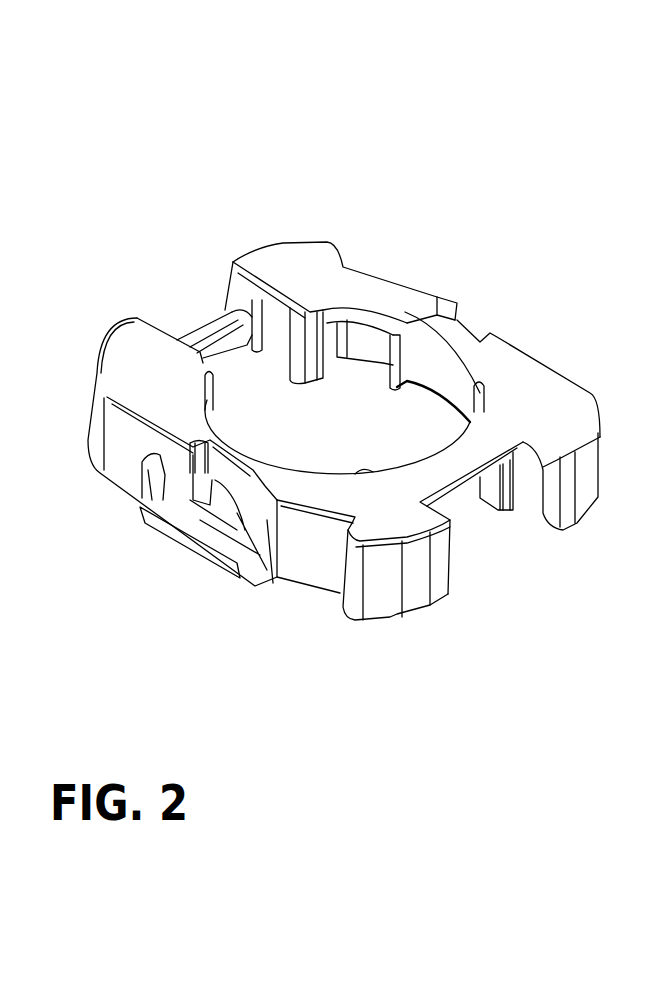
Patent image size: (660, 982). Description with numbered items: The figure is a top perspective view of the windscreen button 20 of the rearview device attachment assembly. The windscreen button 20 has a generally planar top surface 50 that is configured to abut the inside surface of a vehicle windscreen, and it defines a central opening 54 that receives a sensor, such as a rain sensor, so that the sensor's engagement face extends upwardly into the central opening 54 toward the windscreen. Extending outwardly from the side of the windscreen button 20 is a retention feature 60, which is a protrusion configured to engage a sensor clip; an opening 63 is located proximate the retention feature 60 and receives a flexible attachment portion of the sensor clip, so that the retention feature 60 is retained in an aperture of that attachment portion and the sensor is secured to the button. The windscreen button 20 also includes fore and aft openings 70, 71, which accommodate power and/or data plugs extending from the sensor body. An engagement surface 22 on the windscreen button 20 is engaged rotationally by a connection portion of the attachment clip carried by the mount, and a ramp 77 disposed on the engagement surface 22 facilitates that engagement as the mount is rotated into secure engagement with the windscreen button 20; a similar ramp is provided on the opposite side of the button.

The windscreen button 20 is at (527, 113).
The engagement surface 22 is at (187, 540).
The top surface 50 is at (313, 263).
The central opening 54 is at (345, 418).
The retention feature 60 is at (222, 493).
The opening 63 is at (213, 492).
The fore opening 70 is at (207, 340).
The aft opening 71 is at (465, 523).
The ramp 77 is at (240, 555).